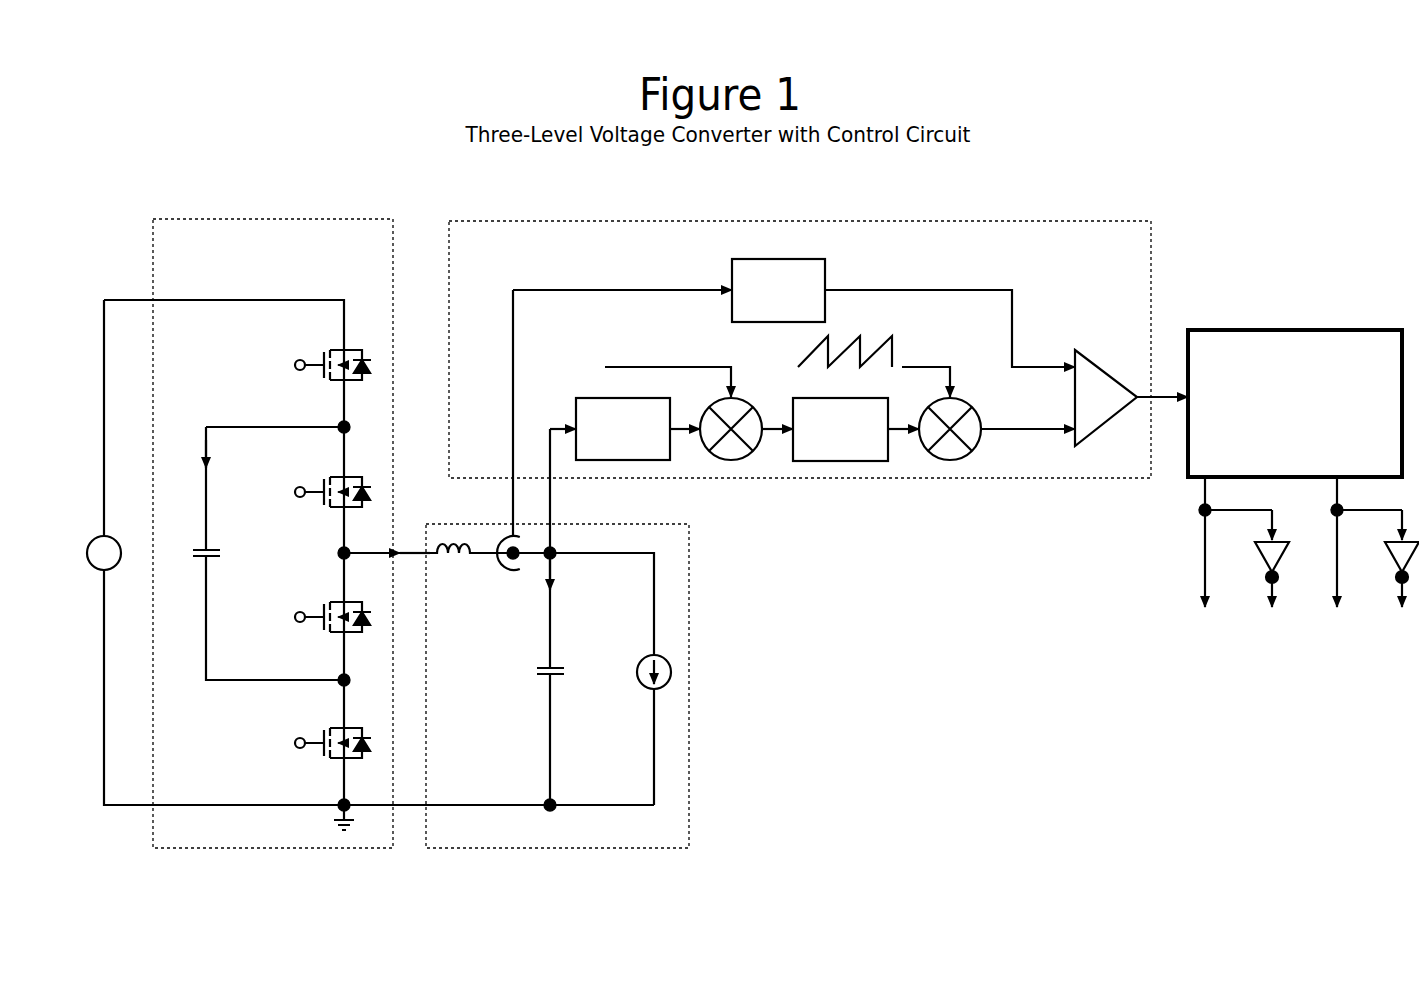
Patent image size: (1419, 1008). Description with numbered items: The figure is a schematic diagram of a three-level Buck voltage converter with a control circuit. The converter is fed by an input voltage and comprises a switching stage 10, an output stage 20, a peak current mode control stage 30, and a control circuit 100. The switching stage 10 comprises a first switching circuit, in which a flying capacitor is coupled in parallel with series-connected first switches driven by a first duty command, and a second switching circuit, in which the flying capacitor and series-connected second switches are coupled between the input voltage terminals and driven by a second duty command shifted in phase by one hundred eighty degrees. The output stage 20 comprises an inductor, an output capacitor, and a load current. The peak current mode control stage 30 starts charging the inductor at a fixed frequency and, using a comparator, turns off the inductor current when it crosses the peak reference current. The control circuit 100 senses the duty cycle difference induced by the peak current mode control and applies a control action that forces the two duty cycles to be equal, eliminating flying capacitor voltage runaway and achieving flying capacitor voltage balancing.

The switching stage 10 is at (183, 254).
The output stage 20 is at (457, 717).
The peak current mode control stage 30 is at (481, 256).
The control circuit 100 is at (1277, 399).